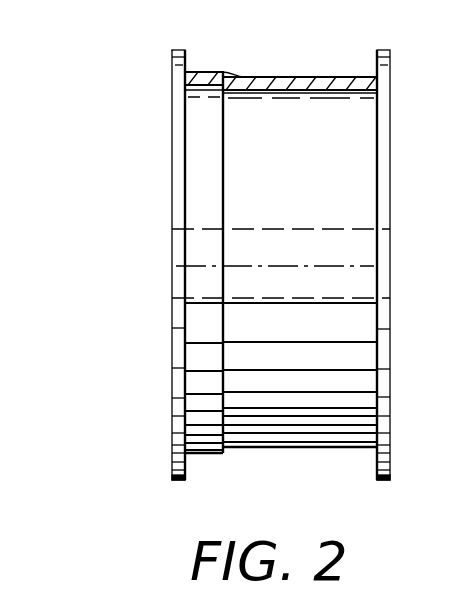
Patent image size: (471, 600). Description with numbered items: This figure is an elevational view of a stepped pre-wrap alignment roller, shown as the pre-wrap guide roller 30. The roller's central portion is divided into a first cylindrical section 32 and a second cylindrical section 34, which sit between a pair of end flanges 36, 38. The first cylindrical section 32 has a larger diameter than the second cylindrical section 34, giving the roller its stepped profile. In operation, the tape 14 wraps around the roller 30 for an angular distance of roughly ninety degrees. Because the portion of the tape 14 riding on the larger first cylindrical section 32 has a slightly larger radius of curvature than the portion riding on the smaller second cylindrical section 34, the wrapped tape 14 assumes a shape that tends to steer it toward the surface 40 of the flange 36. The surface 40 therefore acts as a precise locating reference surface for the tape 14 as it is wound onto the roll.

The pre-wrap guide roller 30 is at (395, 53).
The tape 14 is at (294, 73).
The surface 40 is at (194, 58).
The first cylindrical section 32 is at (208, 455).
The second cylindrical section 34 is at (320, 448).
The end flange 36 is at (176, 482).
The end flange 38 is at (381, 481).